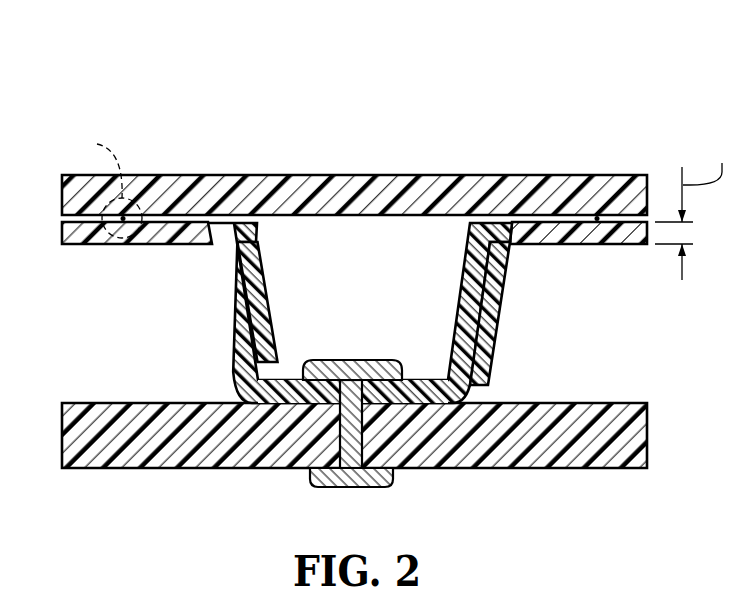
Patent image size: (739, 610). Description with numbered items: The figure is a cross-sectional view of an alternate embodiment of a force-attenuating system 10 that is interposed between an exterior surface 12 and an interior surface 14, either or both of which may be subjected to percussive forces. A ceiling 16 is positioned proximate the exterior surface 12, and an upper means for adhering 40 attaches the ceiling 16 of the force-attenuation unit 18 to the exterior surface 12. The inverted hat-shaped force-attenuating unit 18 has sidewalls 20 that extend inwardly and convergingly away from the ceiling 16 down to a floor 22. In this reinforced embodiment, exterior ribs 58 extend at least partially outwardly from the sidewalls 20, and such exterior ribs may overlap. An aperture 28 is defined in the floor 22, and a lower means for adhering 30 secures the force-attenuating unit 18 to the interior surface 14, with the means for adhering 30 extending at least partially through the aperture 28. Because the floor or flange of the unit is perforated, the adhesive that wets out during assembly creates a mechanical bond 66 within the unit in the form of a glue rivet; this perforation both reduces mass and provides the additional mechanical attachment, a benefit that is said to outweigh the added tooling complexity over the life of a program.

The force-attenuating system 10 is at (572, 86).
The exterior surface 12 is at (406, 174).
The interior surface 14 is at (585, 403).
The ceiling 16 is at (533, 245).
The force-attenuating unit 18 is at (342, 250).
The sidewall 20 is at (328, 313).
The floor 22 is at (290, 380).
The aperture 28 is at (362, 382).
The lower means for adhering 30 is at (348, 358).
The upper means for adhering 40 is at (112, 244).
The exterior rib 58 is at (502, 322).
The mechanical bond 66 is at (360, 478).